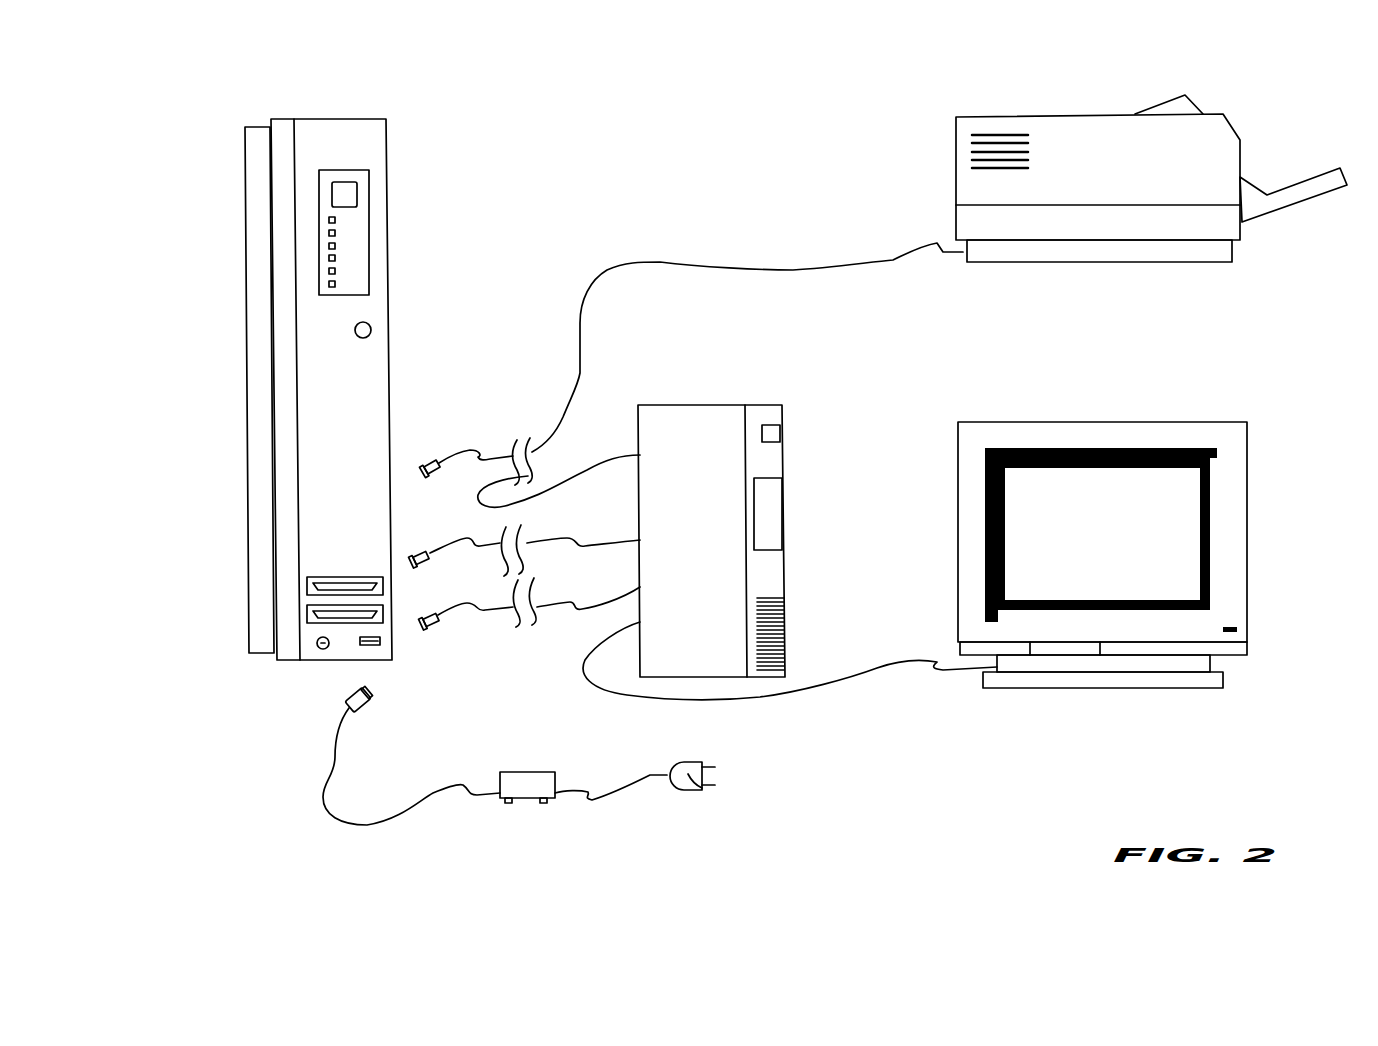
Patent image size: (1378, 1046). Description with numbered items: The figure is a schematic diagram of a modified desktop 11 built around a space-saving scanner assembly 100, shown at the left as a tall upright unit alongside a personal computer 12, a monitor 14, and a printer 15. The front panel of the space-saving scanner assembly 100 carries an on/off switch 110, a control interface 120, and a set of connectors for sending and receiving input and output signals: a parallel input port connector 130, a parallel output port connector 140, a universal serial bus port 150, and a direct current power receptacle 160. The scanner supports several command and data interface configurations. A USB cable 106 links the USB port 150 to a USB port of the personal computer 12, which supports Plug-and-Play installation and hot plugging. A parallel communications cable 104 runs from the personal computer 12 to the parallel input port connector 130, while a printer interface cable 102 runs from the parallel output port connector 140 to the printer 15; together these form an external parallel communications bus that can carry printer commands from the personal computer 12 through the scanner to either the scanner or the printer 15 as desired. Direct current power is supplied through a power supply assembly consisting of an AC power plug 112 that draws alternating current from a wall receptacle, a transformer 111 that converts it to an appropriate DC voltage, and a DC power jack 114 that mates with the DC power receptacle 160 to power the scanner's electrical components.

The modified desktop 11 is at (684, 106).
The personal computer 12 is at (693, 420).
The monitor 14 is at (1118, 432).
The printer 15 is at (1053, 130).
The space-saving scanner assembly 100 is at (332, 130).
The printer interface cable 102 is at (466, 450).
The parallel communications cable 104 is at (441, 551).
The USB cable 106 is at (467, 605).
The on/off switch 110 is at (368, 331).
The transformer 111 is at (530, 780).
The AC power plug 112 is at (700, 790).
The DC power jack 114 is at (370, 712).
The control interface 120 is at (362, 183).
The parallel input port connector 130 is at (307, 592).
The parallel output port connector 140 is at (307, 622).
The universal serial bus (USB) port 150 is at (380, 643).
The direct current (DC) power receptacle 160 is at (318, 647).